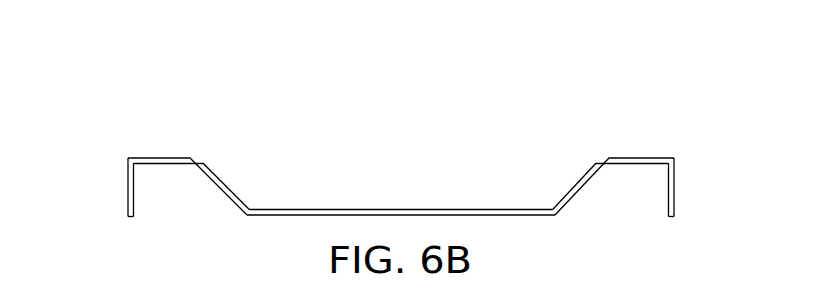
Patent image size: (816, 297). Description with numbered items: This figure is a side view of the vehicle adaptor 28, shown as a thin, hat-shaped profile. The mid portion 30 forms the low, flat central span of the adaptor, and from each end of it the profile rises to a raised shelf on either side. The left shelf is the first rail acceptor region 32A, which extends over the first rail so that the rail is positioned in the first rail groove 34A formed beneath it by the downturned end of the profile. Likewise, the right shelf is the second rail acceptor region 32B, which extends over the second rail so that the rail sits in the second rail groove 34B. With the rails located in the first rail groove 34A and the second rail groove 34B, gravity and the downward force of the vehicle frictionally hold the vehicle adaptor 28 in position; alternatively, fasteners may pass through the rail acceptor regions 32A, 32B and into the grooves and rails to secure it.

The vehicle adaptor 28 is at (400, 122).
The mid portion 30 is at (419, 199).
The first rail acceptor region 32A is at (152, 141).
The second rail acceptor region 32B is at (650, 141).
The first rail groove 34A is at (154, 188).
The second rail groove 34B is at (648, 188).